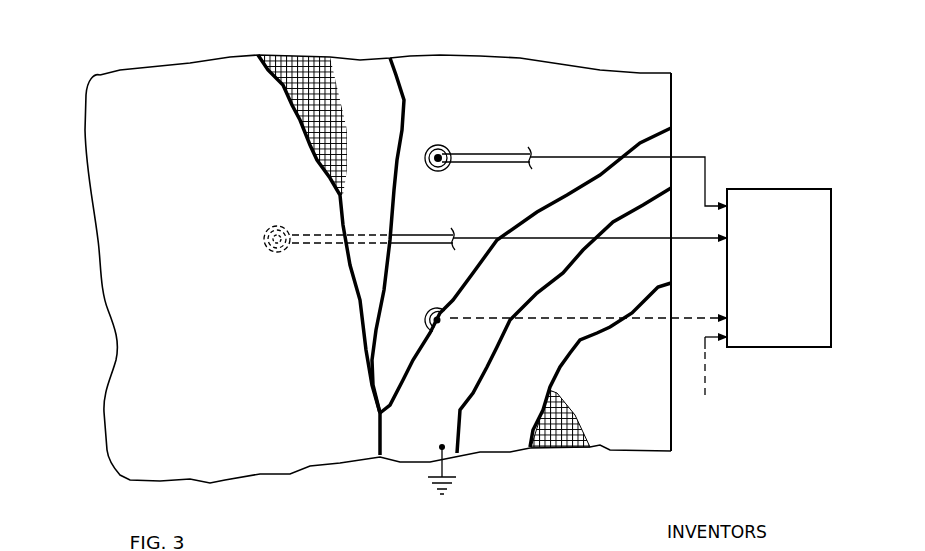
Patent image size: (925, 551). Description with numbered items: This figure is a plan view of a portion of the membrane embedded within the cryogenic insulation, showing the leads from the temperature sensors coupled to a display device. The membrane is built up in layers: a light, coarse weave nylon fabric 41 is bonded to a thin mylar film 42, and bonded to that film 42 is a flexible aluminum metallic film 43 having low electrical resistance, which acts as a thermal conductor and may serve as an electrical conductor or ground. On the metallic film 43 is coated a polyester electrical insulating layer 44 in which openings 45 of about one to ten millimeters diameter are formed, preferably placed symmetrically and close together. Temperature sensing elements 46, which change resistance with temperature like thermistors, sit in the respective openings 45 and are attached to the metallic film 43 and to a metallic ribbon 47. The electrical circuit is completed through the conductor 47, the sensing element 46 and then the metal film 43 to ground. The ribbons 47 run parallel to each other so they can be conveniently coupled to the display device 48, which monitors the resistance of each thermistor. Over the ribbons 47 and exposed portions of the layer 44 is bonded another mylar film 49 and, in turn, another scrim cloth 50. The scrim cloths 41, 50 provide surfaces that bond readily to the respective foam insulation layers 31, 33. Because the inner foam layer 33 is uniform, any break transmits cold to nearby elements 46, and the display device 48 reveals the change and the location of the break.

The foam insulation layer 31 is at (125, 128).
The inner foam layer 33 is at (643, 425).
The coarse weave nylon fabric 41 is at (560, 430).
The mylar film 42 is at (493, 425).
The metallic film 43 is at (408, 430).
The electrical insulating layer 44 is at (432, 75).
The openings 45 is at (440, 145).
The temperature sensing elements 46 is at (444, 166).
The metallic ribbon 47 is at (500, 155).
The display device 48 is at (770, 215).
The mylar film 49 is at (350, 60).
The scrim cloth 50 is at (300, 68).